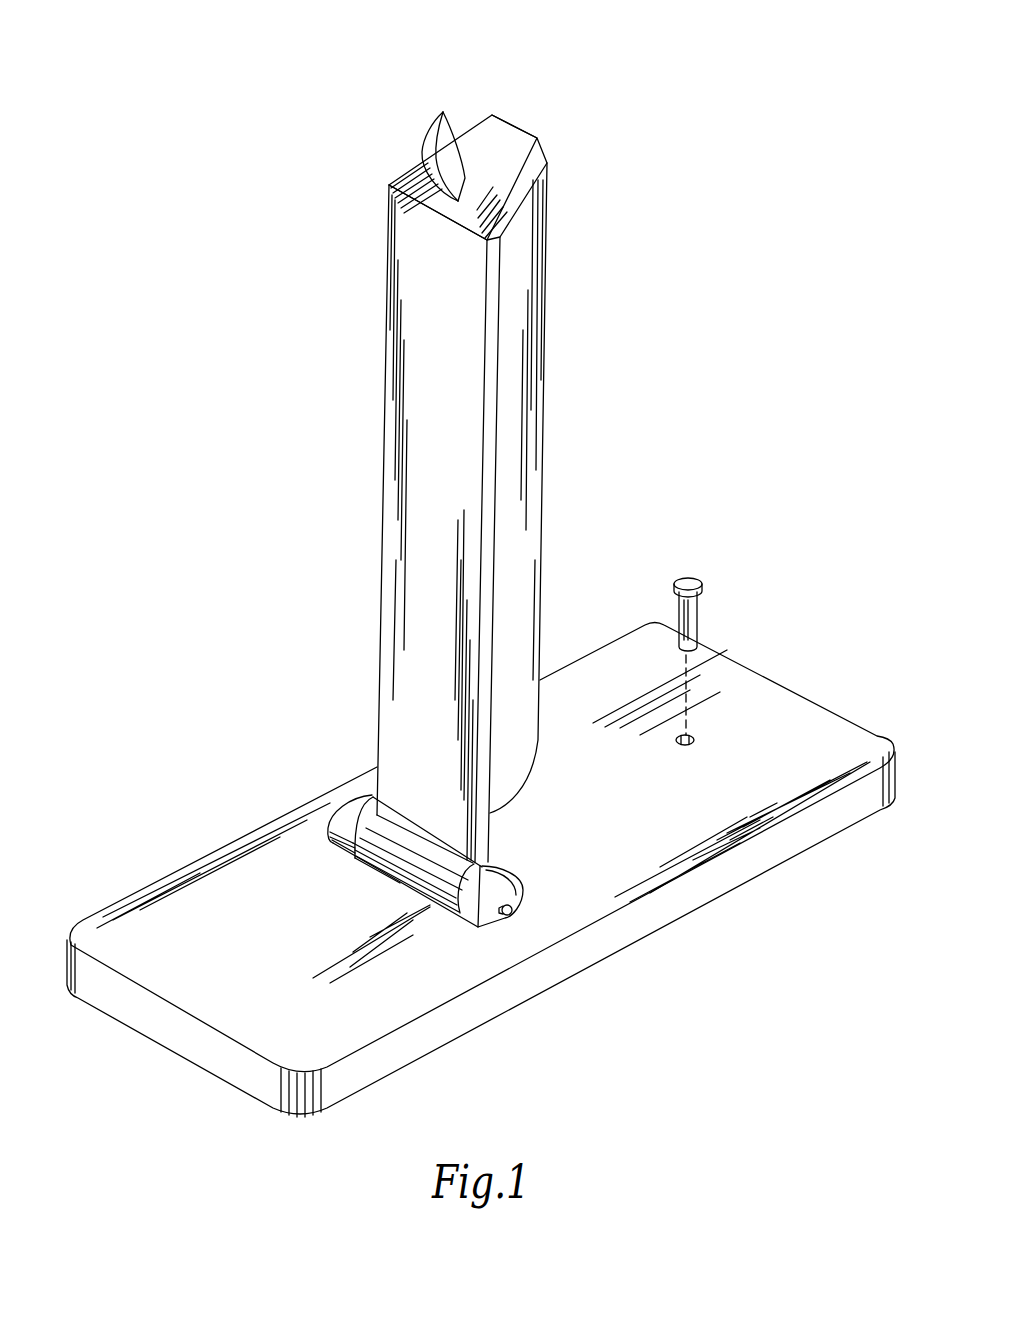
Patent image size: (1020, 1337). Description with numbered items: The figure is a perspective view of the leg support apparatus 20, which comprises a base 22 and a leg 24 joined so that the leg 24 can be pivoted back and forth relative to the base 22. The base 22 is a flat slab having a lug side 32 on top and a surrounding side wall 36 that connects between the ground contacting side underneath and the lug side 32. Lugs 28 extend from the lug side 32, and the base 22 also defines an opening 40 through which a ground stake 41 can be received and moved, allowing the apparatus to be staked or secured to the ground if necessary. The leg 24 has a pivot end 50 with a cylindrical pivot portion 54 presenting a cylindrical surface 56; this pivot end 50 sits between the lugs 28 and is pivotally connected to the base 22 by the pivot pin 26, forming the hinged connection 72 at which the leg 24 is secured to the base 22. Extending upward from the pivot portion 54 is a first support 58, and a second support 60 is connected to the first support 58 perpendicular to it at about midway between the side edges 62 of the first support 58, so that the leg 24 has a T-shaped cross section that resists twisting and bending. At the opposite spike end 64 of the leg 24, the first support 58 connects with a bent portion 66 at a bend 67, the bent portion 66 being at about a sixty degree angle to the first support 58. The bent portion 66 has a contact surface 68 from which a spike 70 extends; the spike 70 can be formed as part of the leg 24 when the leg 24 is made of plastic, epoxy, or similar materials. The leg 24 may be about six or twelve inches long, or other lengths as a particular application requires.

The leg support apparatus 20 is at (464, 446).
The base 22 is at (642, 655).
The leg 24 is at (507, 475).
The pivot pin 26 is at (517, 882).
The lugs 28 is at (355, 813).
The lug side 32 is at (132, 932).
The surrounding side wall 36 is at (138, 1012).
The opening 40 is at (697, 738).
The ground stake 41 is at (687, 692).
The pivot end 50 is at (437, 868).
The pivot portion 54 is at (413, 815).
The cylindrical surface 56 is at (395, 840).
The first support 58 is at (410, 575).
The second support 60 is at (507, 408).
The side edges 62 is at (493, 573).
The spike end 64 is at (483, 140).
The bent portion 66 is at (513, 139).
The bend 67 is at (447, 218).
The contact surface 68 is at (502, 132).
The spike 70 is at (432, 155).
The hinged connection 72 is at (510, 915).